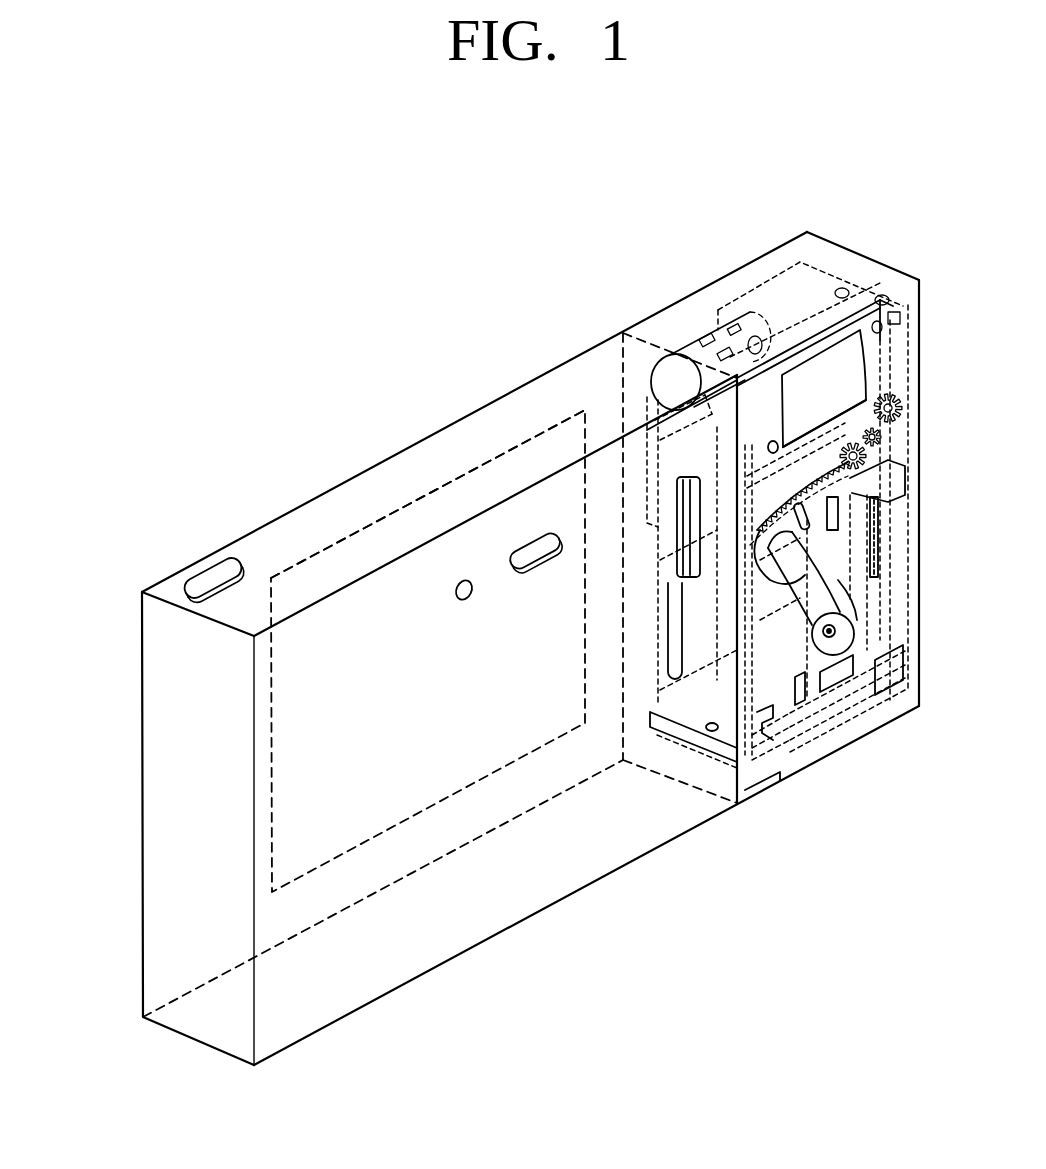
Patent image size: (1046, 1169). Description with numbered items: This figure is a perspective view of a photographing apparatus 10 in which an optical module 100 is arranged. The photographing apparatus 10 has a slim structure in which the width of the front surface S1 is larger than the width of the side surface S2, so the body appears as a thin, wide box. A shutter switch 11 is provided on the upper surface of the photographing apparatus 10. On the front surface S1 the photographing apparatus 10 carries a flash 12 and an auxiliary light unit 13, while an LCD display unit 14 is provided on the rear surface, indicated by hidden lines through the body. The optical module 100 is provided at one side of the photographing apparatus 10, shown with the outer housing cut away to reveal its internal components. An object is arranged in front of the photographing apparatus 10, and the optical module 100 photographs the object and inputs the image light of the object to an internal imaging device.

The photographing apparatus 10 is at (206, 434).
The shutter switch 11 is at (212, 573).
The flash 12 is at (535, 547).
The auxiliary light unit 13 is at (460, 583).
The LCD display unit 14 is at (338, 542).
The optical module 100 is at (845, 272).
The front surface S1 is at (338, 990).
The side surface S2 is at (197, 963).